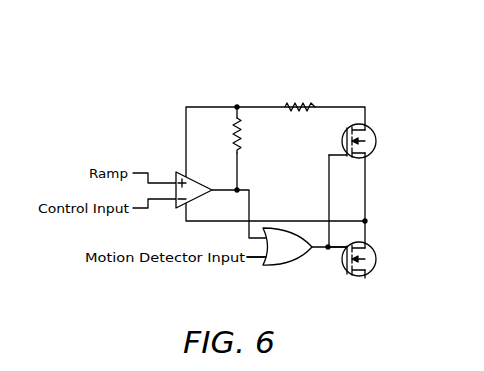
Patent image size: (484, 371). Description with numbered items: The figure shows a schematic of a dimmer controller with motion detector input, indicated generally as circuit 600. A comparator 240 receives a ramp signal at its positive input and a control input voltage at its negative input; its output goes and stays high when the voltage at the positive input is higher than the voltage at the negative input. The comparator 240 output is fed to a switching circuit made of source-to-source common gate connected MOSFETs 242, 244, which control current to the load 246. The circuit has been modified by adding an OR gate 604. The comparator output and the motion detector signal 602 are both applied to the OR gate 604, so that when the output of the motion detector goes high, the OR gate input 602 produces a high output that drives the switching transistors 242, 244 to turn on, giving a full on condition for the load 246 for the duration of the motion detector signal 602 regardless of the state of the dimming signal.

The power control circuit 600 is at (293, 65).
The comparator 240 is at (192, 176).
The metal oxide semiconductor field effect transistor 242 is at (376, 264).
The metal oxide semiconductor field effect transistor 244 is at (376, 146).
The load 246 is at (315, 110).
The motion detector signal 602 is at (258, 258).
The OR gate 604 is at (278, 267).